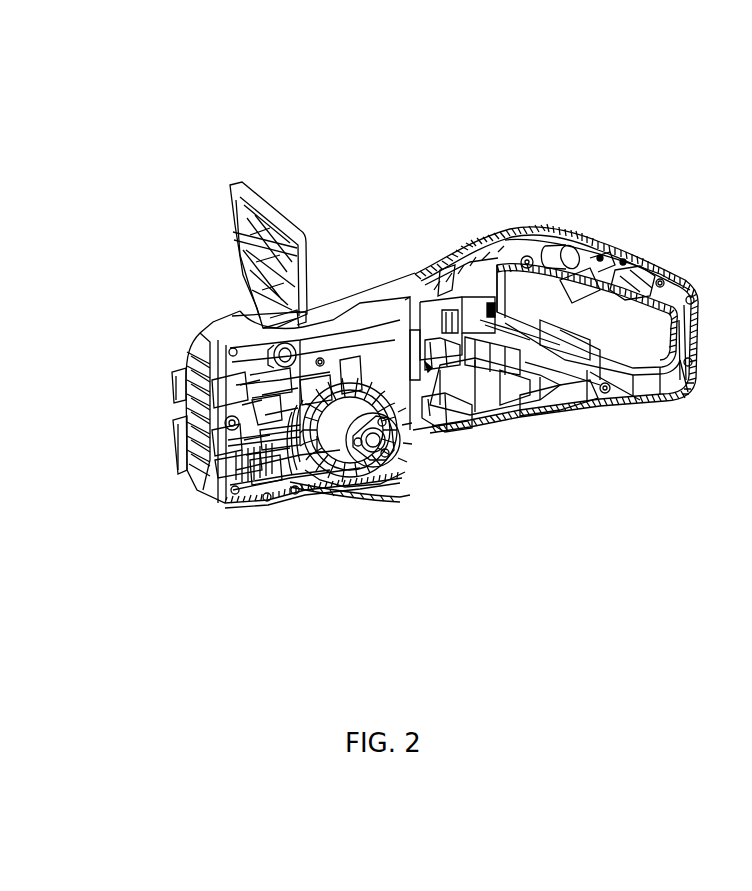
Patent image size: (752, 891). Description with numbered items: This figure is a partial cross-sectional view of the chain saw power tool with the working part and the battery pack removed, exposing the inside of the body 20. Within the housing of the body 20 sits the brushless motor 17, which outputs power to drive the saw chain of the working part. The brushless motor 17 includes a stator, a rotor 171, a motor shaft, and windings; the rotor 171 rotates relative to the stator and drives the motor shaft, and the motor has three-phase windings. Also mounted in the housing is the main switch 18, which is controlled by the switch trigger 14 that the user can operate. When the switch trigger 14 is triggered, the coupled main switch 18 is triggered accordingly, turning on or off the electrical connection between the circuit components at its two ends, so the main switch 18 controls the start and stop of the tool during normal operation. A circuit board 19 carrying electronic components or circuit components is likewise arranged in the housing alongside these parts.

The body 20 is at (200, 162).
The main switch 18 is at (470, 248).
The switch trigger 14 is at (587, 238).
The circuit board 19 is at (467, 420).
The brushless motor 17 is at (400, 450).
The rotor 171 is at (390, 492).